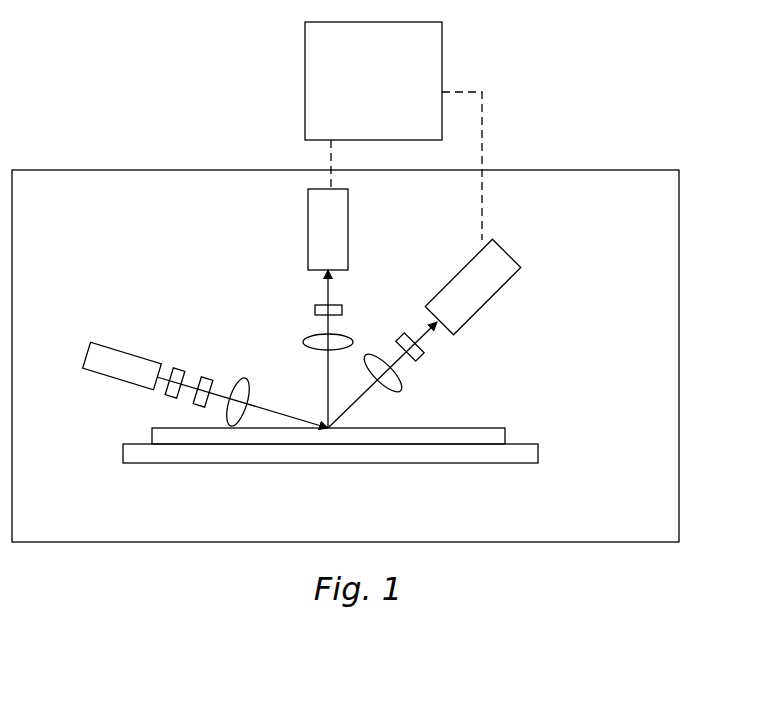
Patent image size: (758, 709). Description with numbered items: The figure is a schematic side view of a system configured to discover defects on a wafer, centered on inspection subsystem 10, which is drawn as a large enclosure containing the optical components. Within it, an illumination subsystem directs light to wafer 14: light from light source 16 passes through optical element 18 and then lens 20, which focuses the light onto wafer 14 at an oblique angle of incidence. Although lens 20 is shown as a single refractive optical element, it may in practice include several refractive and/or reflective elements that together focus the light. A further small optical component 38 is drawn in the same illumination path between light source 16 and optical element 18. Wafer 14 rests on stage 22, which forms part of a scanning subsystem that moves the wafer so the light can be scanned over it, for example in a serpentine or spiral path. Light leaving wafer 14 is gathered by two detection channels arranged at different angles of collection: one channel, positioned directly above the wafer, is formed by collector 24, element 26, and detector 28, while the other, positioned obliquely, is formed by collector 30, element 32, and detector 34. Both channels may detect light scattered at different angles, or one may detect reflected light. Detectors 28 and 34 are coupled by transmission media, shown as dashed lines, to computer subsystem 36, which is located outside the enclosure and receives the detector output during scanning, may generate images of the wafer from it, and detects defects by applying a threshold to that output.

The inspection subsystem 10 is at (680, 248).
The wafer 14 is at (163, 428).
The light source 16 is at (92, 352).
The optical element 18 is at (205, 377).
The lens 20 is at (242, 382).
The stage 22 is at (123, 458).
The collector 24 is at (308, 333).
The element 26 is at (315, 307).
The detector 28 is at (308, 233).
The collector 30 is at (402, 390).
The element 32 is at (420, 357).
The detector 34 is at (503, 288).
The computer subsystem 36 is at (393, 131).
The optical element 38 is at (178, 367).